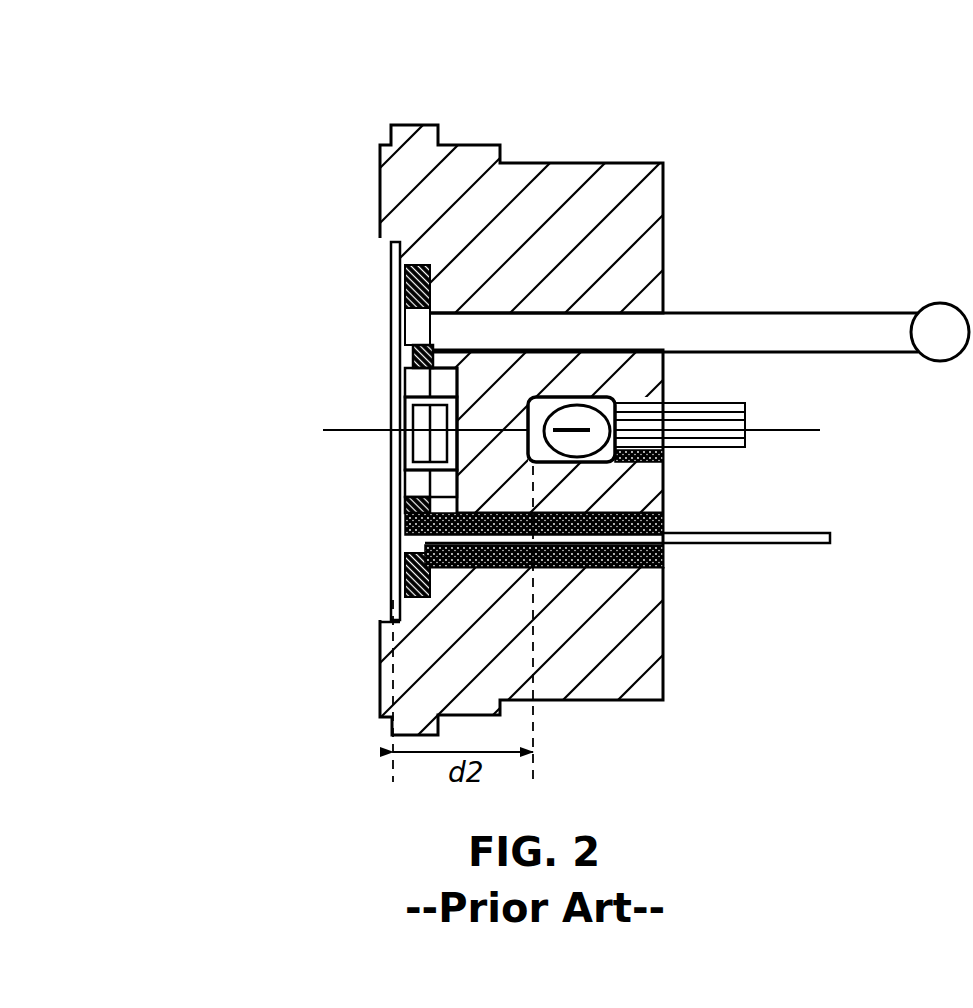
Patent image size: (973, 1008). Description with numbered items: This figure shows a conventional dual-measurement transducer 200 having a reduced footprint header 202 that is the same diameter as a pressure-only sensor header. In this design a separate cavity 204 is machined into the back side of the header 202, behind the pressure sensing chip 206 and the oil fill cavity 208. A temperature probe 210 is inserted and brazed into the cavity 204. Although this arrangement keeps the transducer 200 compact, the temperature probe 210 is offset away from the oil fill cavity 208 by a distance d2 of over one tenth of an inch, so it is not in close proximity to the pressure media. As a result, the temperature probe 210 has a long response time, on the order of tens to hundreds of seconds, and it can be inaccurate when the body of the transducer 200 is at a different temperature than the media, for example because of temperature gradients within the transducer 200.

The dual-measurement transducer 200 is at (652, 58).
The header 202 is at (566, 178).
The cavity 204 is at (630, 468).
The pressure sensing chip 206 is at (428, 442).
The oil fill cavity 208 is at (378, 290).
The temperature probe 210 is at (574, 420).